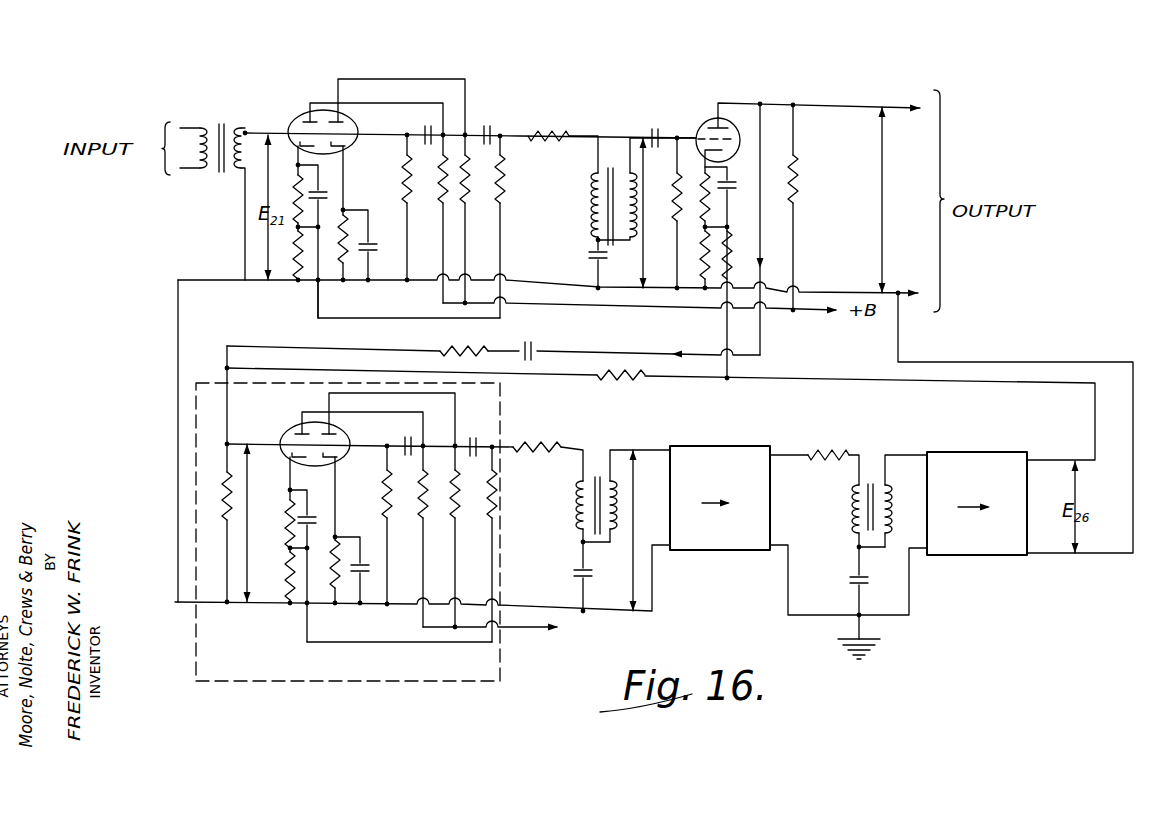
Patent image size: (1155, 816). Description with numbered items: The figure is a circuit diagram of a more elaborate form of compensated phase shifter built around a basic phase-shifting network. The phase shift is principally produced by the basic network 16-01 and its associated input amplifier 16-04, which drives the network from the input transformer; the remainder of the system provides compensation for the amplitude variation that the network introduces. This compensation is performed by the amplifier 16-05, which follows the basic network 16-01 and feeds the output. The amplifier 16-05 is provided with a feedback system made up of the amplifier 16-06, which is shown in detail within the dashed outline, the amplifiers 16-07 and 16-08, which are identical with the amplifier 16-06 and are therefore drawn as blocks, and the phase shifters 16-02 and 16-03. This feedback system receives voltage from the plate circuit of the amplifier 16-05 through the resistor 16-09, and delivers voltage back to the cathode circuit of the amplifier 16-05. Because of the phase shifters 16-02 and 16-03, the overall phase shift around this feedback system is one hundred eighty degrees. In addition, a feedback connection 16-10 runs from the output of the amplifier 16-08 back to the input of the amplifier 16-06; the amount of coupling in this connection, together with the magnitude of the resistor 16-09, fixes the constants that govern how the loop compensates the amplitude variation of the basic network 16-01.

The basic network 16-01 is at (640, 121).
The phase shifter 16-02 is at (657, 441).
The phase shifter 16-03 is at (915, 448).
The input amplifier 16-04 is at (480, 75).
The amplifier 16-05 is at (902, 304).
The amplifier 16-06 is at (205, 438).
The amplifier 16-07 is at (770, 519).
The amplifier 16-08 is at (1026, 522).
The resistor 16-09 is at (484, 336).
The feedback connection 16-10 is at (614, 374).